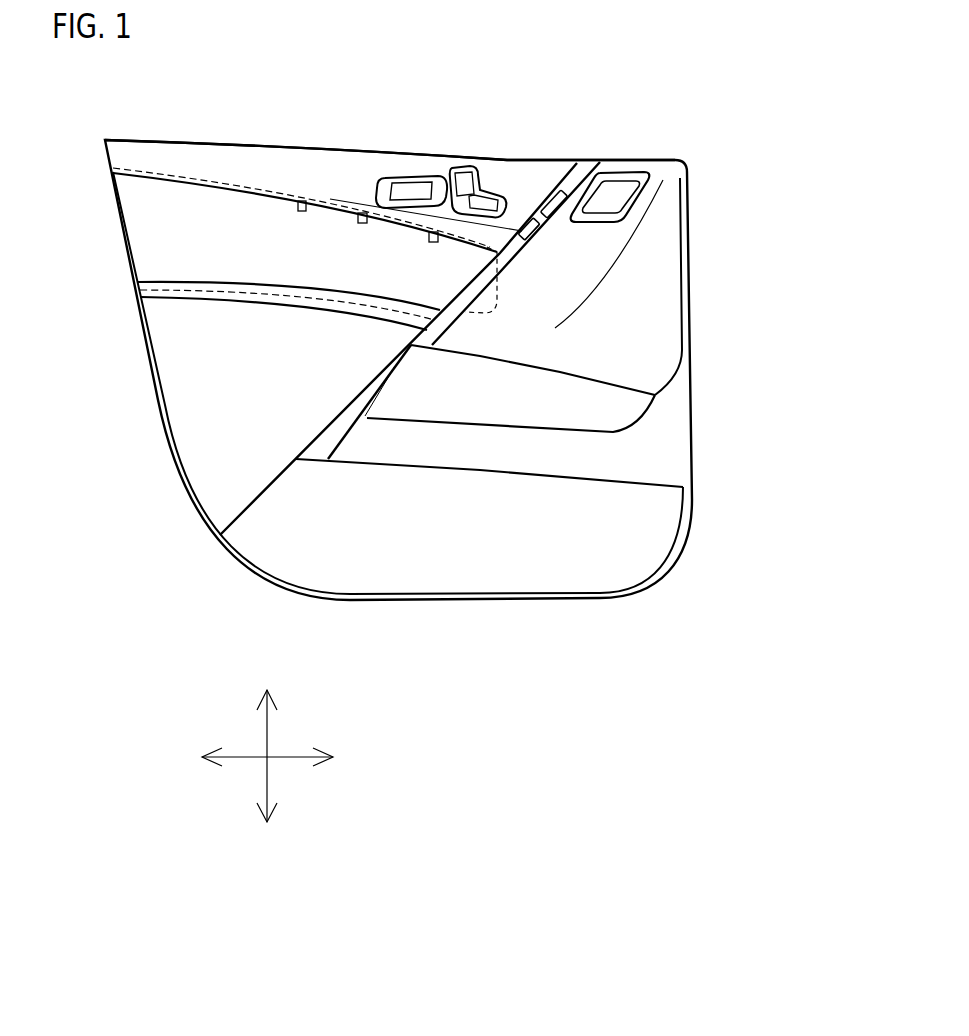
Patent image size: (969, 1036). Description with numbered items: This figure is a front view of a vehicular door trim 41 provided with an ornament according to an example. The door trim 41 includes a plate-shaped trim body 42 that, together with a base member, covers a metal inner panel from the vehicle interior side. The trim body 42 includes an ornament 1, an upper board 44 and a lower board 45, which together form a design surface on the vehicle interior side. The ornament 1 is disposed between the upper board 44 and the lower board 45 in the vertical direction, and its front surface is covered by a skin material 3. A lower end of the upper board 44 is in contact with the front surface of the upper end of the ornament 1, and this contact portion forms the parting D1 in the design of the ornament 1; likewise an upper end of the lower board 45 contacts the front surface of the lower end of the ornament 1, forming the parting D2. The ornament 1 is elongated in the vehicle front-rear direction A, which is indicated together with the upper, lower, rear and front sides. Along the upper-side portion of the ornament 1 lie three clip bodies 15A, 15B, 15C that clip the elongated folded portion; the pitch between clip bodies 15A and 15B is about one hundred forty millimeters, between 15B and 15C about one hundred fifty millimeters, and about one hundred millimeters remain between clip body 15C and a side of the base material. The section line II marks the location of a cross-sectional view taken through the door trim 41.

The ornament 1 is at (157, 255).
The skin material 3 is at (158, 267).
The vehicular door trim 41 is at (561, 112).
The trim body 42 is at (193, 140).
The upper board 44 is at (267, 160).
The lower board 45 is at (202, 370).
The clip body 15A is at (302, 212).
The clip body 15B is at (358, 225).
The clip body 15C is at (428, 243).
The parting D1 is at (177, 187).
The parting D2 is at (207, 277).
The section line II- II is at (289, 352).
The vehicle front-rear direction A is at (293, 757).